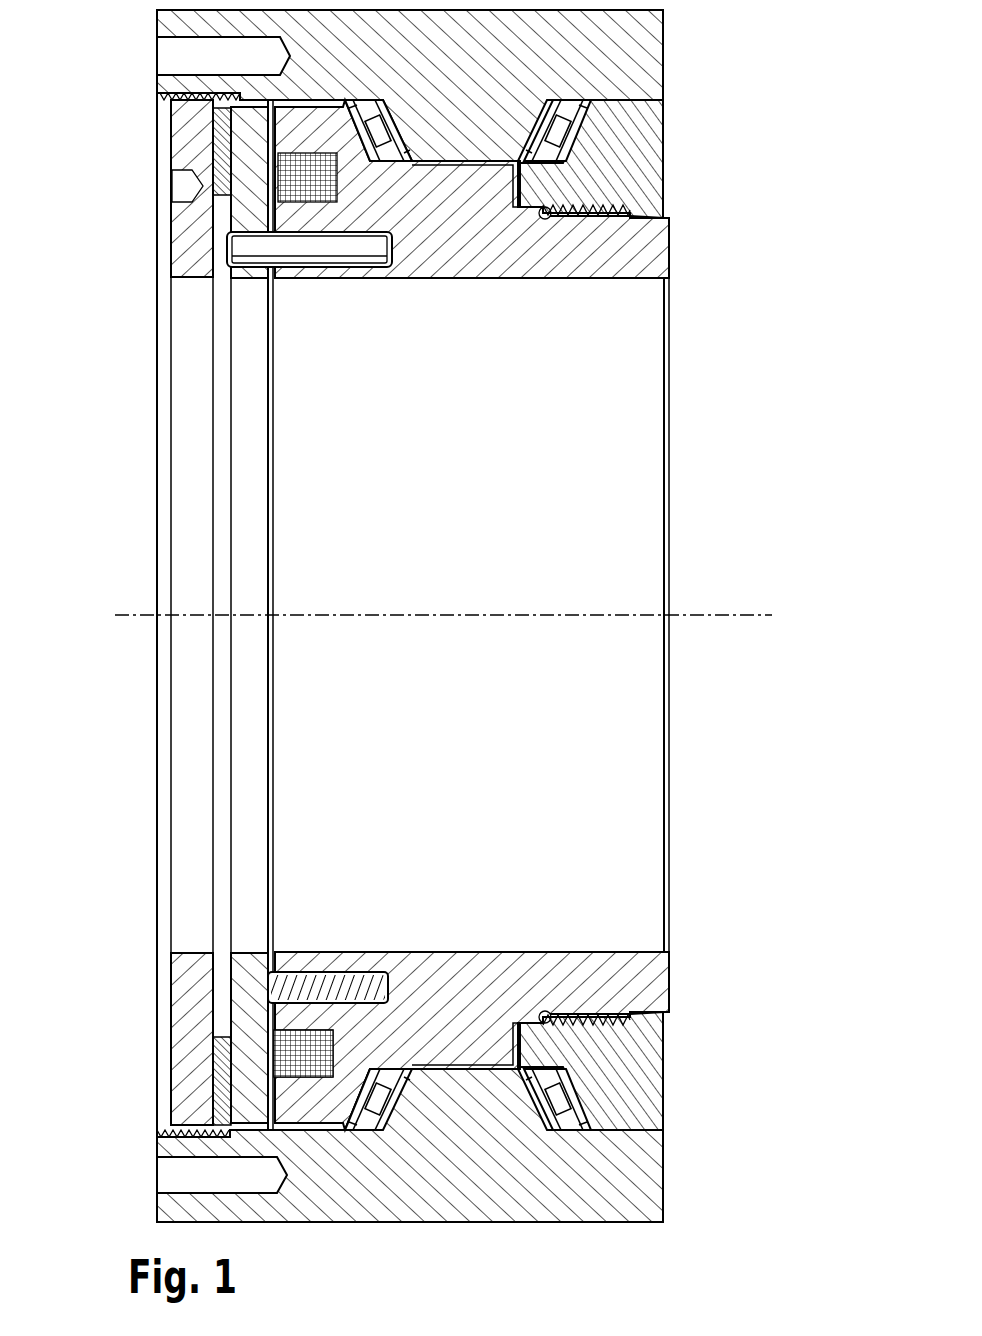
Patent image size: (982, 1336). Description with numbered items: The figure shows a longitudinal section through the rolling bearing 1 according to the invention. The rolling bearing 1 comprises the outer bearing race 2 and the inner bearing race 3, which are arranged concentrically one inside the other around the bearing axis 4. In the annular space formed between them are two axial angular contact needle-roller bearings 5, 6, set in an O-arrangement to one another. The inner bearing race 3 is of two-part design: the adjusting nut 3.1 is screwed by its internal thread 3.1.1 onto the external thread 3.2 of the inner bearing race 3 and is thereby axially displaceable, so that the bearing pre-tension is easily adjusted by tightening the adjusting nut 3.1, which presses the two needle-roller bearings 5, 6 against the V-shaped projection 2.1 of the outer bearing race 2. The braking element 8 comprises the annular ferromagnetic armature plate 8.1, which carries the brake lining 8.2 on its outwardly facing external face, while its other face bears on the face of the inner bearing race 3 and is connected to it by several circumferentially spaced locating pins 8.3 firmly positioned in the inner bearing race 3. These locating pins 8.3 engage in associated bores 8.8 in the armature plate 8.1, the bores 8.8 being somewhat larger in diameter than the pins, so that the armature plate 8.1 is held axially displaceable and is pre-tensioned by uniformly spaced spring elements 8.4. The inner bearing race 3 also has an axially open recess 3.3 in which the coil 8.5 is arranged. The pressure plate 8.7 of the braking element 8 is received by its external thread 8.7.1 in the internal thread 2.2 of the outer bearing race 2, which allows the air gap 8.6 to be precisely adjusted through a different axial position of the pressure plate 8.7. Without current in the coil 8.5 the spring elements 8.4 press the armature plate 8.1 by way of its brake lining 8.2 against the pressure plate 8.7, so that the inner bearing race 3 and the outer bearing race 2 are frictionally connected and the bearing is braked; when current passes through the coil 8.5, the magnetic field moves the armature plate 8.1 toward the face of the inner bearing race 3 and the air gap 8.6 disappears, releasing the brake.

The rolling bearing 1 is at (708, 409).
The outer bearing race 2 is at (635, 35).
The V-shaped projection 2.1 is at (475, 1135).
The internal thread 2.2 is at (158, 118).
The inner bearing race 3 is at (653, 258).
The adjusting nut 3.1 is at (647, 147).
The internal thread 3.1.1 is at (602, 1030).
The external thread 3.2 is at (600, 1060).
The recess 3.3 is at (295, 1060).
The bearing axis 4 is at (708, 614).
The axial angular contact needle-roller bearing 5 is at (556, 1142).
The axial angular contact needle-roller bearing 6 is at (367, 1142).
The braking element 8 is at (158, 222).
The armature plate 8.1 is at (255, 978).
The brake lining 8.2 is at (220, 1058).
The locating pins 8.3 is at (300, 245).
The spring elements 8.4 is at (350, 983).
The coil 8.5 is at (272, 1068).
The air gap 8.6 is at (272, 437).
The pressure plate 8.7 is at (190, 978).
The external thread 8.7.1 is at (182, 1140).
The bores 8.8 is at (222, 270).